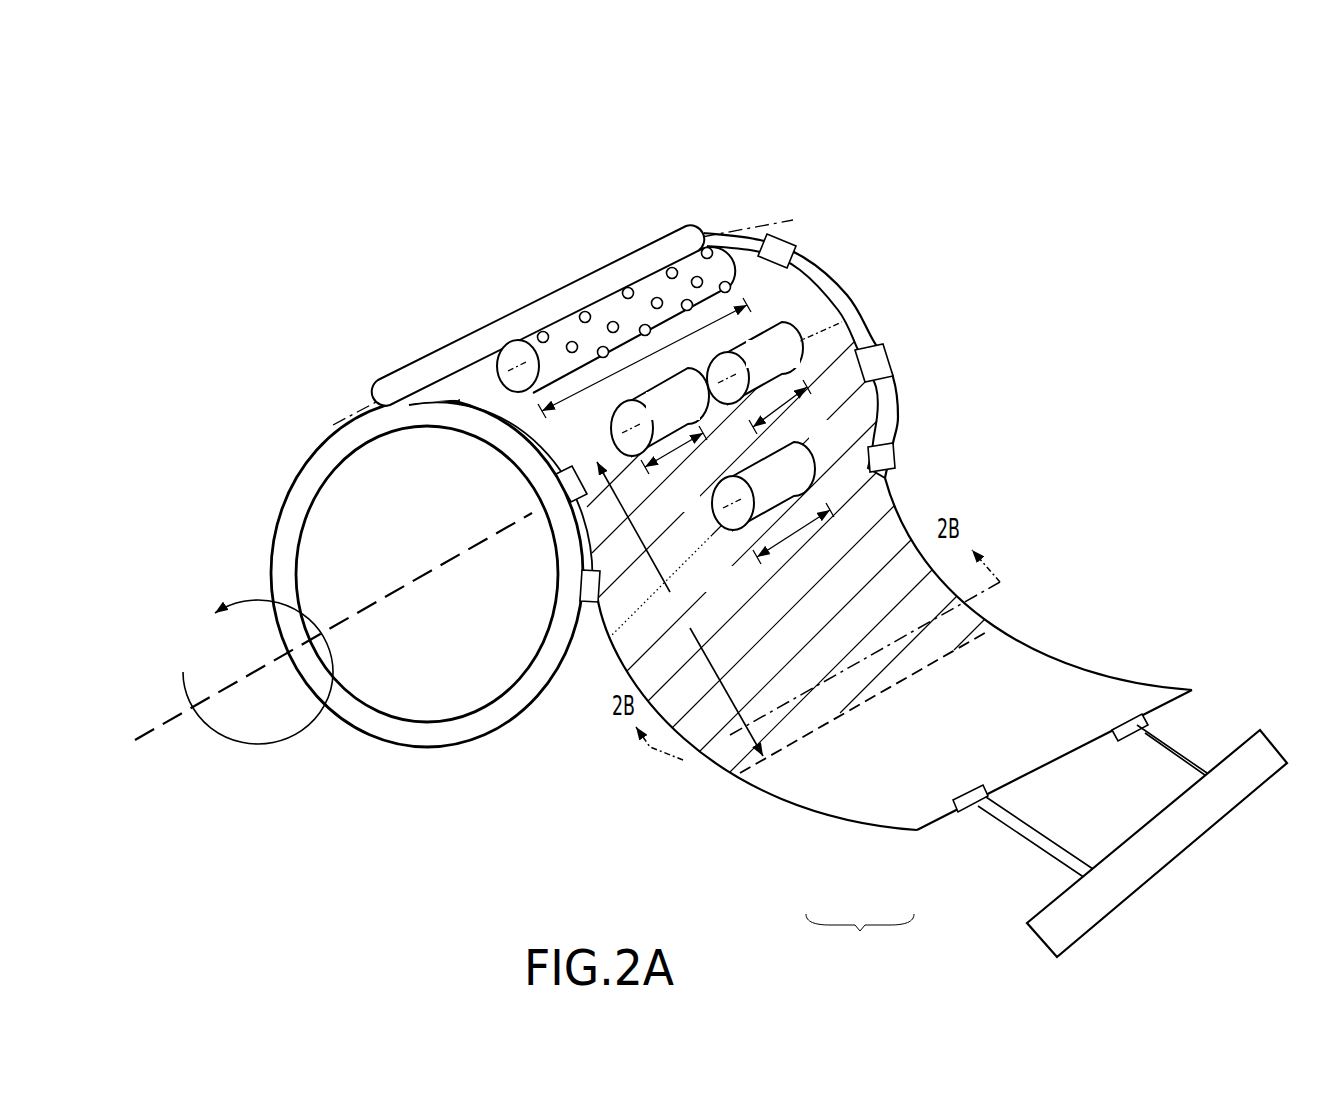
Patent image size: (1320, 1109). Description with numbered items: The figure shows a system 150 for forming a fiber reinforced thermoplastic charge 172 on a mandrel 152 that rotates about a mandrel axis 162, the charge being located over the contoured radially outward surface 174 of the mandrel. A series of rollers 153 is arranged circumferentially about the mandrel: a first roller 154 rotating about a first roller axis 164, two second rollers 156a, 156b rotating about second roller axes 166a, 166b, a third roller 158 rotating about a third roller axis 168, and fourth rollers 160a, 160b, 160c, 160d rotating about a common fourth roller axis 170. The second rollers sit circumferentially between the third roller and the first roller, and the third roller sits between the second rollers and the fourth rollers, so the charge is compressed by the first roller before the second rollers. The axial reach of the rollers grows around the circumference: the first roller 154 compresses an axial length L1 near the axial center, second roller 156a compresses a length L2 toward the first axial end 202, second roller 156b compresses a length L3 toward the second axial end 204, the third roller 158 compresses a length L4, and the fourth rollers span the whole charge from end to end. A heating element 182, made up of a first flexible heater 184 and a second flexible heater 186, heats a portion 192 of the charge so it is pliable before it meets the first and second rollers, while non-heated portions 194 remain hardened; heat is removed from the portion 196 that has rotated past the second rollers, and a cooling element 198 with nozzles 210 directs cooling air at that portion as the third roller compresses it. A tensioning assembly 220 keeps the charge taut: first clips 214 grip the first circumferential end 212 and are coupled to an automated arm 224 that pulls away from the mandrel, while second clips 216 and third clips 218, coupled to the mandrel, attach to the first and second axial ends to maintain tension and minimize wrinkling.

The system 150 is at (250, 150).
The mandrel 152 is at (292, 472).
The series of rollers 153 is at (678, 216).
The first roller 154 is at (801, 490).
The second roller 156a is at (697, 418).
The second roller 156b is at (797, 366).
The third roller 158 is at (617, 317).
The fourth roller 160a is at (418, 362).
The fourth roller 160b is at (468, 347).
The fourth roller 160c is at (553, 300).
The fourth roller 160d is at (657, 257).
The mandrel axis 162 is at (148, 738).
The first roller axis 164 is at (688, 523).
The second roller axis 166a is at (600, 455).
The second roller axis 166b is at (805, 337).
The third roller axis 168 is at (791, 228).
The fourth roller axis 170 is at (735, 218).
The thermoplastic charge 172 is at (1125, 680).
The radially outward surface 174 is at (578, 672).
The heating element 182 is at (860, 940).
The first flexible heater 184 is at (893, 812).
The second flexible heater 186 is at (887, 830).
The portion 192 is at (680, 609).
The non-heated portions 194 is at (1017, 777).
The portion 196 is at (495, 420).
The cooling element 198 is at (527, 350).
The first axial end 202 is at (760, 800).
The second axial end 204 is at (1053, 655).
The nozzles 210 is at (540, 331).
The first circumferential end 212 is at (1168, 708).
The first clips 214 is at (1130, 738).
The second clips 216 is at (442, 400).
The third clips 218 is at (880, 356).
The tensioning assembly 220 is at (895, 338).
The automated arm 224 is at (1178, 830).
The axial length L1 is at (793, 533).
The axial length L2 is at (674, 470).
The axial length L3 is at (792, 414).
The axial length L4 is at (644, 358).